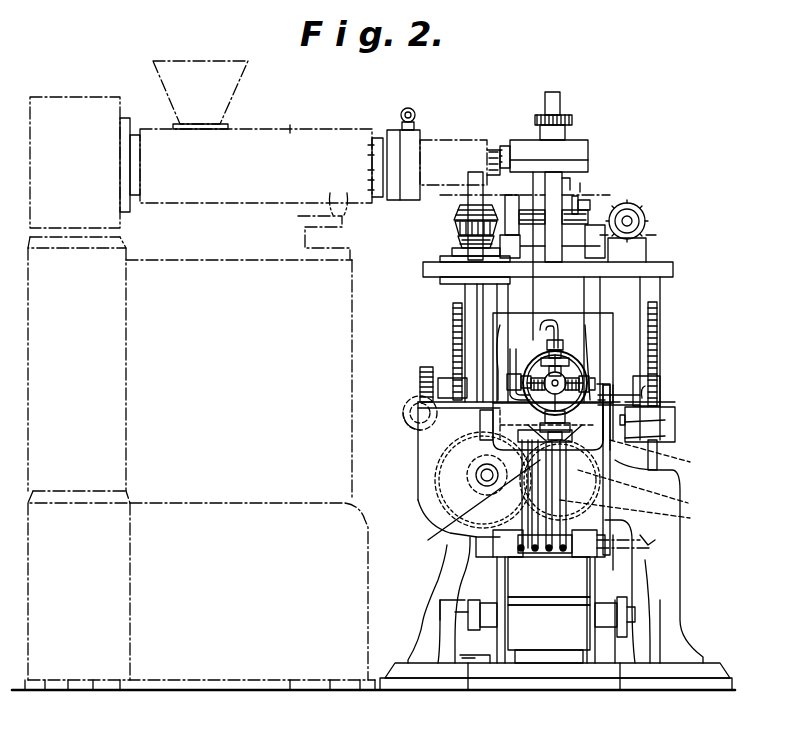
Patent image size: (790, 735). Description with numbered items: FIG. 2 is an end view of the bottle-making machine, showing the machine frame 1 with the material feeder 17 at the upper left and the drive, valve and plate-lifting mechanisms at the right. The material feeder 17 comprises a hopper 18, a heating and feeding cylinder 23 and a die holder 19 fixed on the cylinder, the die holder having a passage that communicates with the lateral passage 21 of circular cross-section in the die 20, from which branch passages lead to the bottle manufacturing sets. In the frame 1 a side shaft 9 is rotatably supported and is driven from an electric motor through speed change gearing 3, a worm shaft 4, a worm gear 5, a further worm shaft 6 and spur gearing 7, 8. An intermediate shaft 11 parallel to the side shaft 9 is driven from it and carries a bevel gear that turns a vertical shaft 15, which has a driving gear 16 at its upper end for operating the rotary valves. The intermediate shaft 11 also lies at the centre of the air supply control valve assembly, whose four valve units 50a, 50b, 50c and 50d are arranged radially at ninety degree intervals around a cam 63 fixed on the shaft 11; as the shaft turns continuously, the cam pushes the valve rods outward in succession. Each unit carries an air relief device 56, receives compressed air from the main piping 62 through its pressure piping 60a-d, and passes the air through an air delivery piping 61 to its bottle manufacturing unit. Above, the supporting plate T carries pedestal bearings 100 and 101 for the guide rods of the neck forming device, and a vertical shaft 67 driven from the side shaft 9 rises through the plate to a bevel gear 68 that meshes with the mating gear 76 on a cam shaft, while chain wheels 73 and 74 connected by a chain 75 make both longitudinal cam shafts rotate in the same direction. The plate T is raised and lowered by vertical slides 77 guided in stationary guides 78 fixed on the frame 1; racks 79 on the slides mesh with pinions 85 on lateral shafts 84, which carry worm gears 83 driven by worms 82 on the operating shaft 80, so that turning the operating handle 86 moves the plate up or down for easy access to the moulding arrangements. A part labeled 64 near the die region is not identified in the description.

The machine frame 1 is at (675, 572).
The speed change gearing 3 is at (545, 645).
The worm shaft 4 is at (675, 418).
The worm gear 5 is at (628, 512).
The worm shaft 6 is at (472, 506).
The spur gearing 7 is at (608, 480).
The spur gearing 8 is at (440, 483).
The side shaft 9 is at (476, 475).
The intermediate shaft 11 is at (550, 382).
The vertical shaft 15 is at (562, 195).
The driving gear 16 is at (574, 121).
The material feeder 17 is at (368, 111).
The hopper 18 is at (200, 61).
The die holder 19 is at (456, 140).
The die 20 is at (588, 150).
The lateral passage 21 is at (640, 214).
The heating and feeding cylinder 23 is at (289, 117).
The valve unit 50a is at (560, 344).
The valve unit 50b is at (590, 376).
The valve unit 50c is at (491, 445).
The valve unit 50d is at (510, 349).
The air relief device 56 is at (640, 398).
The pressure piping 60a-d is at (548, 555).
The air delivery piping 61 is at (533, 294).
The main piping 62 is at (655, 548).
The cam 63 is at (572, 360).
The die block 64 is at (506, 540).
The vertical shaft 67 is at (477, 298).
The bevel gear 68 is at (452, 248).
The chain wheel 73 is at (648, 226).
The chain wheel 74 is at (462, 212).
The chain 75 is at (612, 210).
The mating gear 76 is at (455, 226).
The vertical slide 77 is at (606, 291).
The stationary guide 78 is at (600, 320).
The rack 79 is at (453, 322).
The operating shaft 80 is at (412, 424).
The worm 82 is at (418, 436).
The worm gear 83 is at (420, 384).
The lateral shaft 84 is at (625, 385).
The pinion 85 is at (446, 378).
The operating handle 86 is at (405, 412).
The pedestal bearing 100 is at (640, 262).
The pedestal bearing 101 is at (440, 259).
The supporting plate T is at (673, 269).